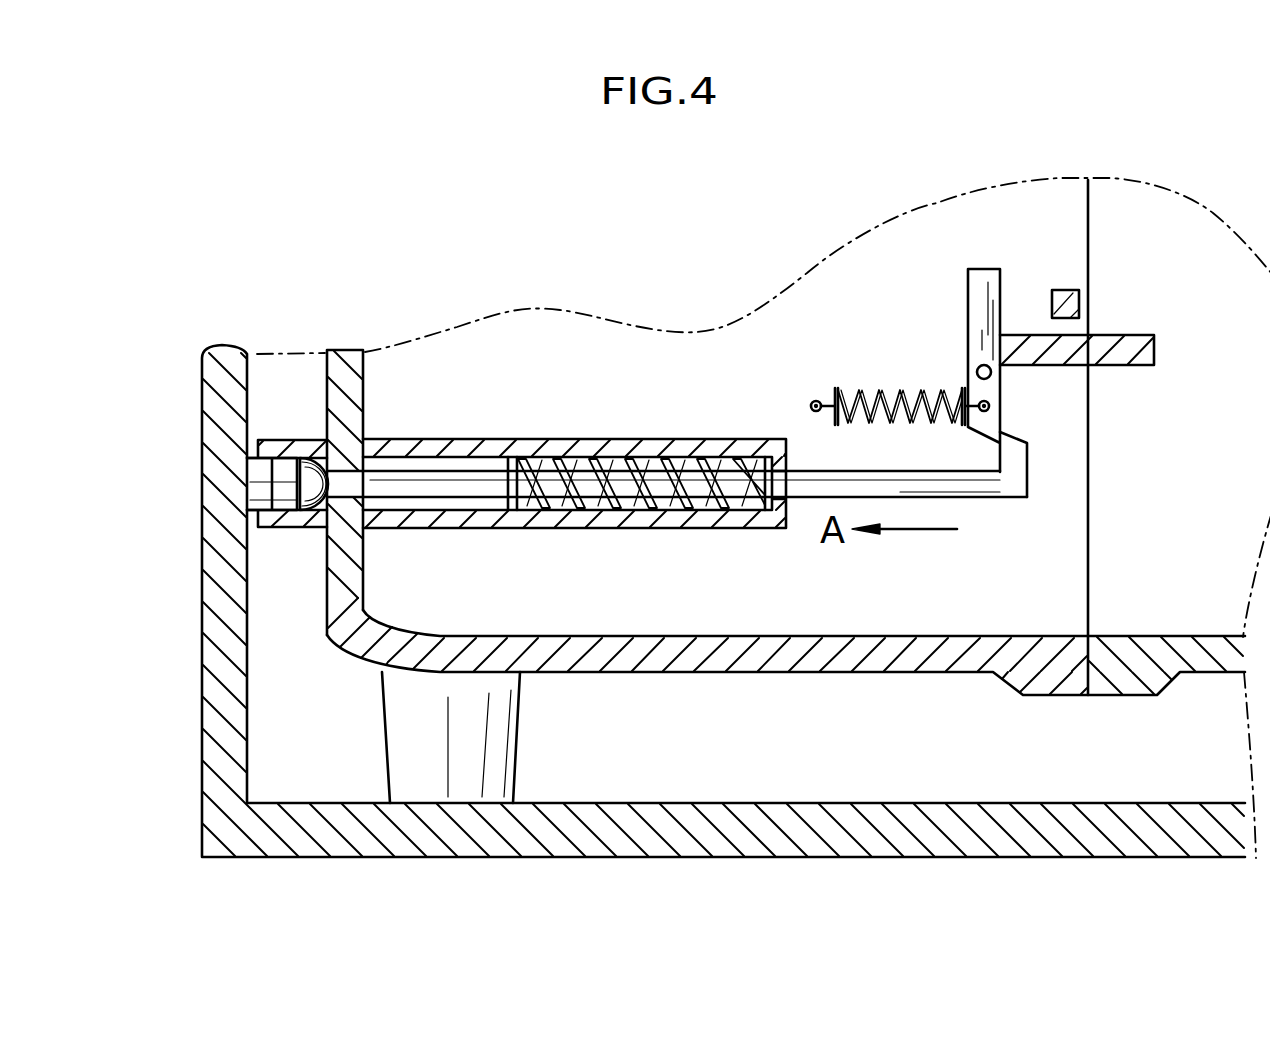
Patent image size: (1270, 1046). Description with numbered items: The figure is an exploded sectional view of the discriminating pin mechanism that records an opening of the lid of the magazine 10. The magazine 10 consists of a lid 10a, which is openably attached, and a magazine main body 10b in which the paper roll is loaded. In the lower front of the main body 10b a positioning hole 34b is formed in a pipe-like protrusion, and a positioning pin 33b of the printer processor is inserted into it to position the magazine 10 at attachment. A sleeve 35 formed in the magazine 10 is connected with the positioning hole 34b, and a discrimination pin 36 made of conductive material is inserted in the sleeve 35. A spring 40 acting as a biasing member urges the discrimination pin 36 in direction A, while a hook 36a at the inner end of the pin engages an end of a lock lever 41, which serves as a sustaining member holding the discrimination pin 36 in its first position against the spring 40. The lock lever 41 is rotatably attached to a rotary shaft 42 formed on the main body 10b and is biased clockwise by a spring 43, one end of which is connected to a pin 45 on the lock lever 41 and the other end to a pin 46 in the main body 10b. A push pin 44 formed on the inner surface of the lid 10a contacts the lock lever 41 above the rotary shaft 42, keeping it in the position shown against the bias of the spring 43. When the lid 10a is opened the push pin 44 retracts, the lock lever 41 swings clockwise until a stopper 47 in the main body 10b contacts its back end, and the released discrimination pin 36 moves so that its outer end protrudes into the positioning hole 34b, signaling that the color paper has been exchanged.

The magazine 10 is at (786, 697).
The lid 10a is at (1135, 663).
The magazine main body 10b is at (955, 652).
The positioning pin 33b is at (262, 483).
The positioning hole 34b is at (323, 528).
The sleeve 35 is at (460, 440).
The discrimination pin 36 is at (431, 485).
The hook 36a is at (1017, 452).
The spring 40 is at (672, 441).
The lock lever 41 is at (984, 277).
The rotary shaft 42 is at (977, 372).
The spring 43 is at (840, 388).
The push pin 44 is at (1135, 346).
The pin 45 is at (1003, 406).
The pin 46 is at (810, 406).
The stopper 47 is at (1066, 300).